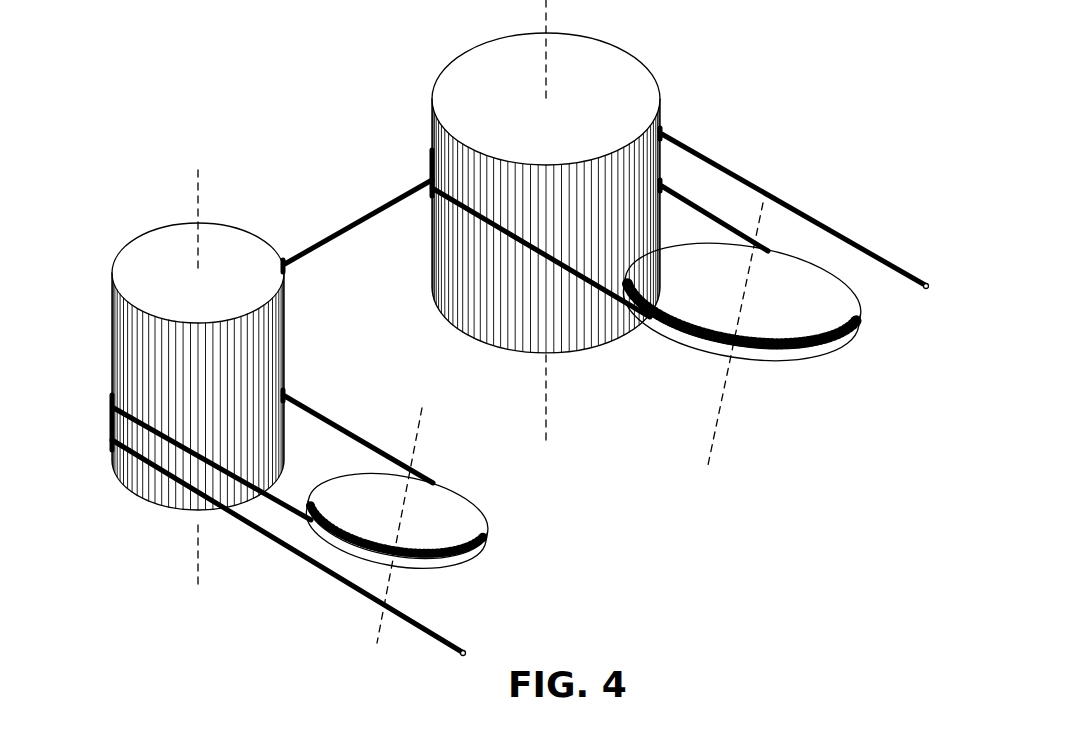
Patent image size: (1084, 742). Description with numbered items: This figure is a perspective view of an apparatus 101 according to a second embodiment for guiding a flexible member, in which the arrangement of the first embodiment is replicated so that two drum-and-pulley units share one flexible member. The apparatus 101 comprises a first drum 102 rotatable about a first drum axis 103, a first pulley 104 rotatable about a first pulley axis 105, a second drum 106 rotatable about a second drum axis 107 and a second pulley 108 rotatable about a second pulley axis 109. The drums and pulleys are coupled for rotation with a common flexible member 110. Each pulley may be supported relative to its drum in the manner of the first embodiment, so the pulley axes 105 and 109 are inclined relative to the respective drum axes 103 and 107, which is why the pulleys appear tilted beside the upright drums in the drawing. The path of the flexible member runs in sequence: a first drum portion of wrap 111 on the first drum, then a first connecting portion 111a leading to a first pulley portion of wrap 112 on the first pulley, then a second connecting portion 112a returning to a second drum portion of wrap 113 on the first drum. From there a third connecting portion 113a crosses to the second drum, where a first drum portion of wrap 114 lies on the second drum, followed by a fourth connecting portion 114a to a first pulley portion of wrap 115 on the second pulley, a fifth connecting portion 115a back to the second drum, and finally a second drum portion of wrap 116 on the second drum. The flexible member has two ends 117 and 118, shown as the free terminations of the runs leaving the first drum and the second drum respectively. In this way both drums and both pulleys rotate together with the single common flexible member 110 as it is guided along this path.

The apparatus 101 is at (742, 66).
The first drum 102 is at (628, 70).
The first drum axis 103 is at (552, 15).
The first pulley 104 is at (823, 314).
The first pulley axis 105 is at (768, 215).
The second drum 106 is at (257, 247).
The second drum axis 107 is at (206, 185).
The second pulley 108 is at (463, 522).
The second pulley axis 109 is at (428, 424).
The common flexible member 110 is at (759, 203).
The first drum portion of wrap 111 is at (428, 160).
The first connecting portion 111a is at (555, 272).
The first pulley portion of wrap 112 is at (798, 352).
The second connecting portion 112a is at (720, 218).
The second drum portion of wrap 113 is at (664, 128).
The third connecting portion 113a is at (356, 220).
The first drum portion of wrap 114 is at (110, 405).
The fourth connecting portion 114a is at (192, 472).
The first pulley portion of wrap 115 is at (436, 565).
The fifth connecting portion 115a is at (322, 418).
The second drum portion of wrap 116 is at (110, 433).
The end of flexible member 117 is at (924, 280).
The end of flexible member 118 is at (432, 646).